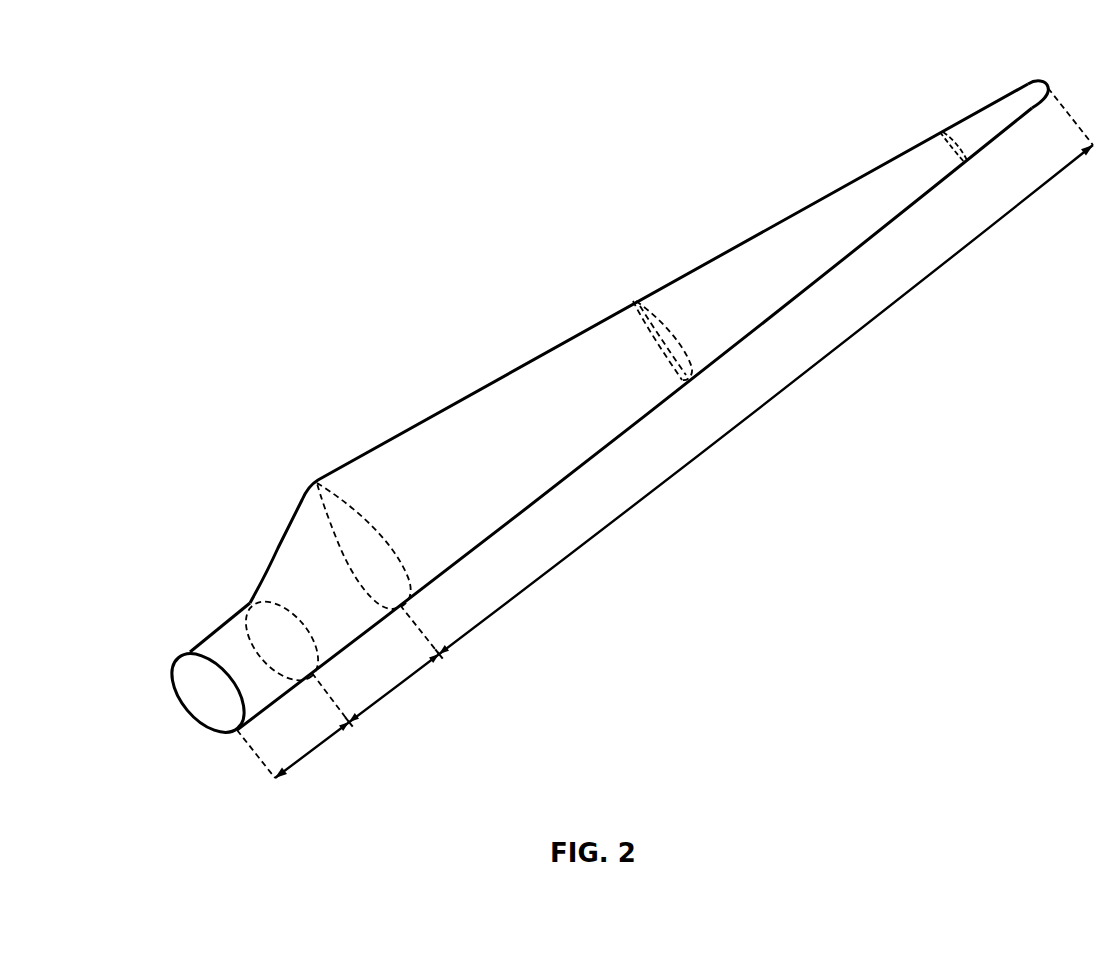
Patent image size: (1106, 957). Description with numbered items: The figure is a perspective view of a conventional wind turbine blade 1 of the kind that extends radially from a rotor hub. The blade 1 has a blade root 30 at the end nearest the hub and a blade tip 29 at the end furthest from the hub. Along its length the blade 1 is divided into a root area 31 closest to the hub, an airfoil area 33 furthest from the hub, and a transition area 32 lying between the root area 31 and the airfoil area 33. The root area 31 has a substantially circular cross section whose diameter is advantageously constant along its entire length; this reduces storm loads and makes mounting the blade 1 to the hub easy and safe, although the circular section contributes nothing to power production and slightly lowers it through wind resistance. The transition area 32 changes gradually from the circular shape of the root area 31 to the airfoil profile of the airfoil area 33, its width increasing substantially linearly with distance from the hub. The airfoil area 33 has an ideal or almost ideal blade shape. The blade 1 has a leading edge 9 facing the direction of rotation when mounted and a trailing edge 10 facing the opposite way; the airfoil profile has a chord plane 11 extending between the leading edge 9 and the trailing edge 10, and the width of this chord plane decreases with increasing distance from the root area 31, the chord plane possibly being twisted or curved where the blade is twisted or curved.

The blade 1 is at (467, 317).
The leading edge 9 is at (792, 303).
The trailing edge 10 is at (873, 167).
The chord plane 11 is at (686, 368).
The blade tip 29 is at (1020, 102).
The blade root 30 is at (226, 634).
The root area 31 is at (313, 753).
The transition area 32 is at (405, 685).
The airfoil area 33 is at (772, 402).